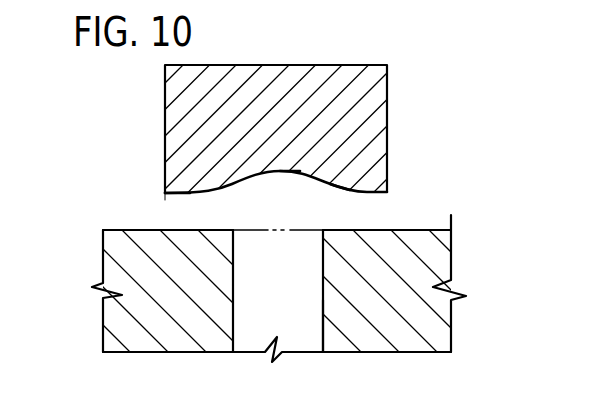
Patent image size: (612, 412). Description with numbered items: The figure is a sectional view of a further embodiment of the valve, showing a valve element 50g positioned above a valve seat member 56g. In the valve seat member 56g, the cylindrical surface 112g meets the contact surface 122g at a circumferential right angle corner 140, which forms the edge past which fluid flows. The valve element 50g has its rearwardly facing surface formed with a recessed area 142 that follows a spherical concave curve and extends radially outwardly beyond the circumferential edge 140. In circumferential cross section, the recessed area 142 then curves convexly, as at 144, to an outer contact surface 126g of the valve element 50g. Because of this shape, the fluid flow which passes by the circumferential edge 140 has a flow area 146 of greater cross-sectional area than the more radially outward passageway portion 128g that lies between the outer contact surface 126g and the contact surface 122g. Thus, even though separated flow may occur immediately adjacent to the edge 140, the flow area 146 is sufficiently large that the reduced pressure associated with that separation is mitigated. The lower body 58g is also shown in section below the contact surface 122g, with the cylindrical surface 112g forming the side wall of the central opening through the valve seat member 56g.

The valve element 50g is at (375, 113).
The recessed area 142 is at (275, 172).
The convex curve 144 is at (338, 191).
The flow area 146 is at (330, 213).
The outer contact surface 126g is at (174, 200).
The passageway portion 128g is at (178, 216).
The contact surface 122g is at (134, 228).
The lower base body 58g is at (260, 325).
The valve seat member 56g is at (435, 263).
The cylindrical surface 112g is at (322, 312).
The circumferential right angle corner 140 is at (323, 230).